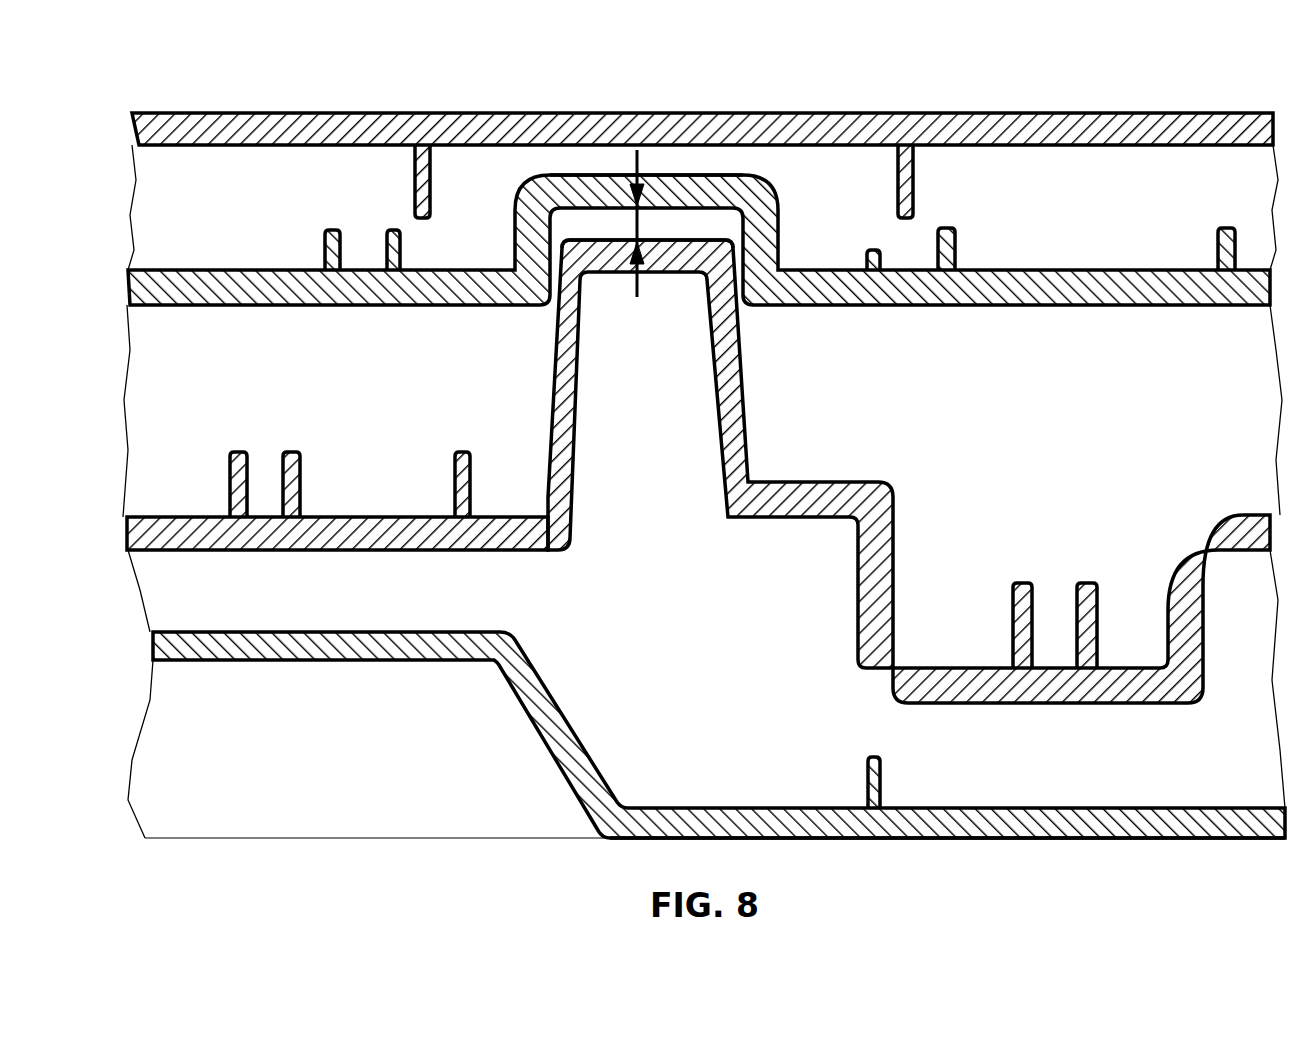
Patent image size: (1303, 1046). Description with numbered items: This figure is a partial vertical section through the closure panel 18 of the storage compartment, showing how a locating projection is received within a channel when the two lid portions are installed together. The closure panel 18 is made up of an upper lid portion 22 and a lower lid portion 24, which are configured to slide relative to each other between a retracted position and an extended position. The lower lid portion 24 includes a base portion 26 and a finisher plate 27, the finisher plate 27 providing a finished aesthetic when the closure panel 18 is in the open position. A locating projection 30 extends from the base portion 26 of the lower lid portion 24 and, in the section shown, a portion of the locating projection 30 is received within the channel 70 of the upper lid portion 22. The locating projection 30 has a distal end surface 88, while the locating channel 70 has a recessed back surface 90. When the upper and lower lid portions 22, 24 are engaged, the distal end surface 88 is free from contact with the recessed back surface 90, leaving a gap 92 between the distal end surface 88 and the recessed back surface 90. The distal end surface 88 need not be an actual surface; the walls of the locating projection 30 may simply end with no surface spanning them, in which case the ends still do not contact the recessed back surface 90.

The closure panel 18 is at (127, 86).
The upper lid portion 22 is at (1112, 113).
The lower lid portion 24 is at (1165, 803).
The base portion 26 is at (213, 517).
The finisher plate 27 is at (1110, 838).
The locating projection 30 is at (546, 357).
The channel 70 is at (573, 220).
The distal end surface 88 is at (605, 258).
The recessed back surface 90 is at (598, 202).
The gap 92 is at (643, 223).